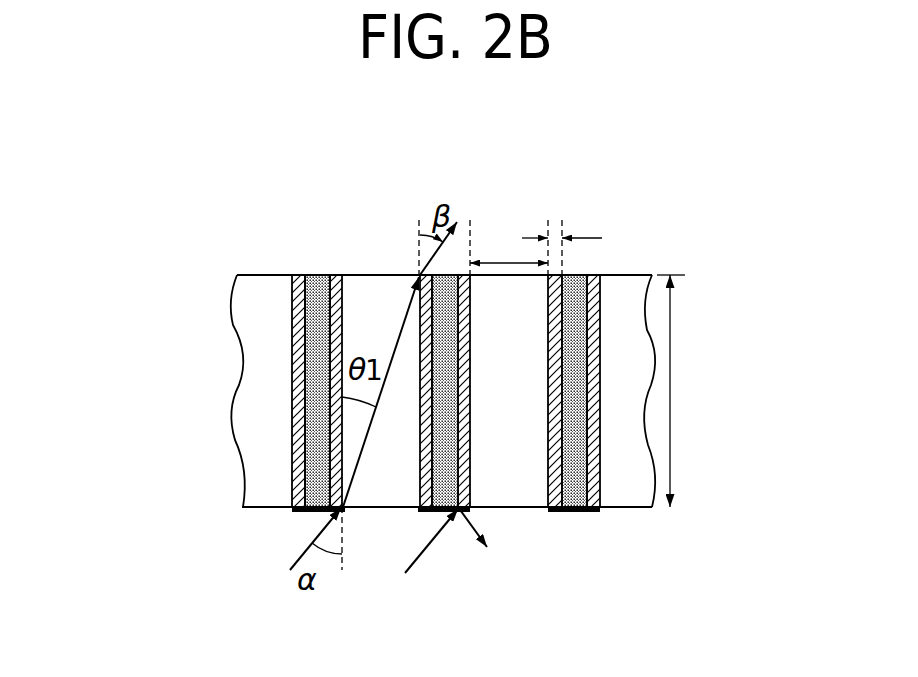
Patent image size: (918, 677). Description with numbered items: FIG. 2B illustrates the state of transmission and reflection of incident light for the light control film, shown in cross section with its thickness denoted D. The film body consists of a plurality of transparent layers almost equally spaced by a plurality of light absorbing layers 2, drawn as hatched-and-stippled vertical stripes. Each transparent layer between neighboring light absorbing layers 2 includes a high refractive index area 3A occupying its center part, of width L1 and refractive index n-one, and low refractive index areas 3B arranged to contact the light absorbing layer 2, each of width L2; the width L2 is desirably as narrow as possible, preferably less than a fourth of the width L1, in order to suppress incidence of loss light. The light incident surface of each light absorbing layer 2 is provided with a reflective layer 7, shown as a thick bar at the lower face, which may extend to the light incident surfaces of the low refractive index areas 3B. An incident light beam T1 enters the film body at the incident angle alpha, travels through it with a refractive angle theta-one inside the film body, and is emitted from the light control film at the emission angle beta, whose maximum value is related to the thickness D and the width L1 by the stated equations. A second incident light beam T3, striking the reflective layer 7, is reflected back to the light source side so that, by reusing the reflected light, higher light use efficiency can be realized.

The light absorbing layer 2 is at (317, 275).
The high refractive index area 3A is at (362, 290).
The low refractive index area 3B is at (418, 478).
The reflective layer 7 is at (563, 512).
The width of the high refractive index area L1 is at (515, 263).
The width of the low refractive index area L2 is at (552, 238).
The thickness D is at (682, 391).
The incident light beam T1 is at (292, 559).
The incident light beam T3 is at (446, 557).